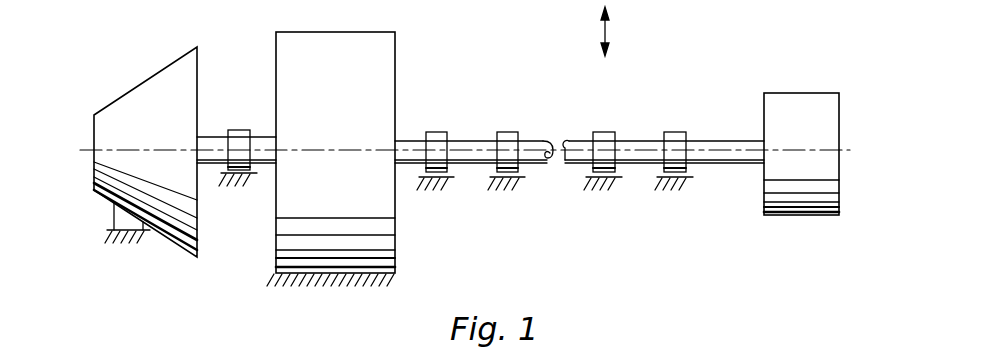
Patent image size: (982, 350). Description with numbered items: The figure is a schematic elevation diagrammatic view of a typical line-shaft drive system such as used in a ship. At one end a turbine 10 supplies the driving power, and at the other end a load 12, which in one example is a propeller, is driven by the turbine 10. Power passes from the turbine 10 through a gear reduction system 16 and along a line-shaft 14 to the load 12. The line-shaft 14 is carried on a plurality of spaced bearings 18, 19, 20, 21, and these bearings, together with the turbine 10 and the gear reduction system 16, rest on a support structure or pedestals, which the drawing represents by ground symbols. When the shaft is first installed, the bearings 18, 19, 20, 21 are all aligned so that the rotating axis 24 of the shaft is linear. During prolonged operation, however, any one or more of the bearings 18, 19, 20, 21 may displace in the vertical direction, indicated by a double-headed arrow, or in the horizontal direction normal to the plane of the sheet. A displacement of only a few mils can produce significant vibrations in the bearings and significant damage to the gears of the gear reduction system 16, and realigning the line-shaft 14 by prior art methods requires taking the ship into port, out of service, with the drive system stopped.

The turbine 10 is at (130, 97).
The load 12 is at (797, 100).
The line-shaft 14 is at (474, 141).
The gear reduction system 16 is at (395, 38).
The bearing 18 is at (435, 132).
The bearing 19 is at (507, 132).
The bearing 20 is at (603, 132).
The bearing 21 is at (675, 132).
The rotating axis 24 is at (742, 153).